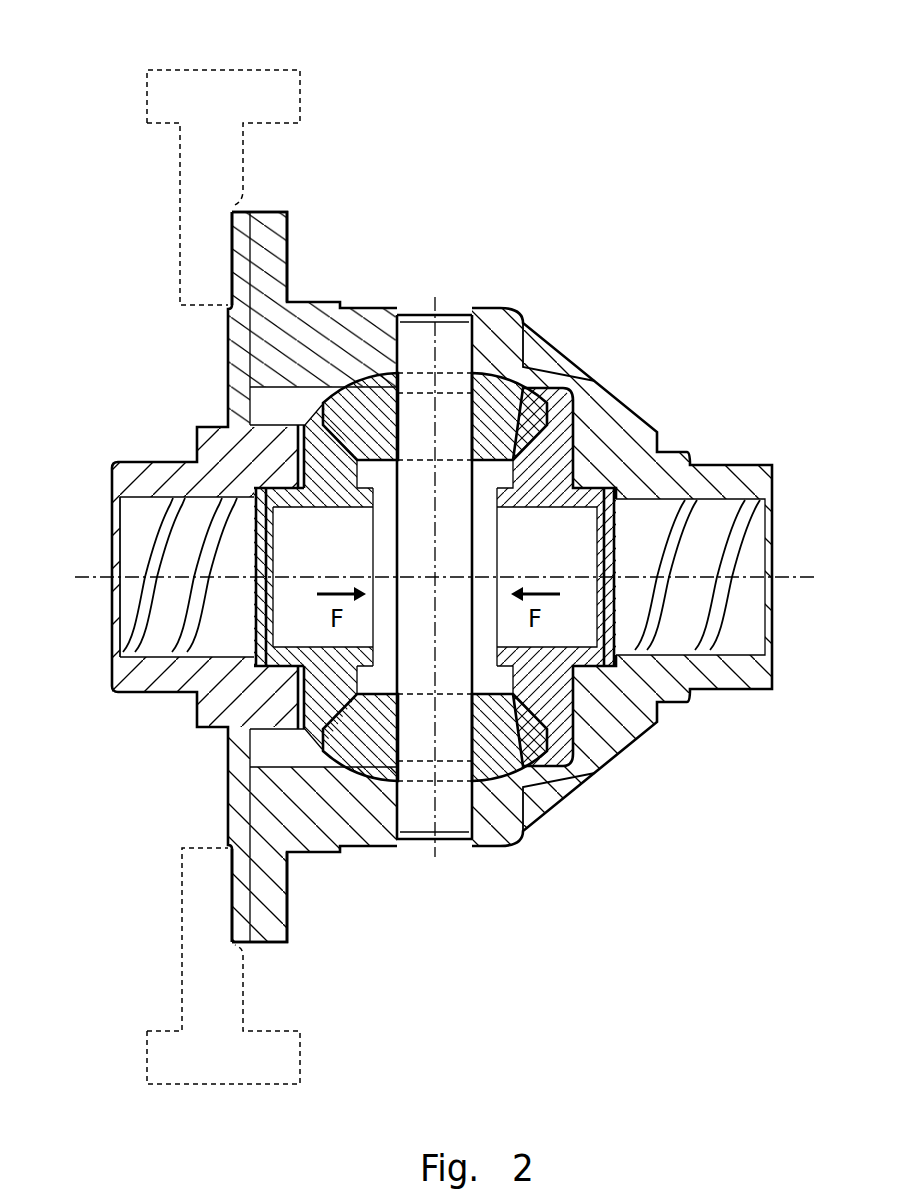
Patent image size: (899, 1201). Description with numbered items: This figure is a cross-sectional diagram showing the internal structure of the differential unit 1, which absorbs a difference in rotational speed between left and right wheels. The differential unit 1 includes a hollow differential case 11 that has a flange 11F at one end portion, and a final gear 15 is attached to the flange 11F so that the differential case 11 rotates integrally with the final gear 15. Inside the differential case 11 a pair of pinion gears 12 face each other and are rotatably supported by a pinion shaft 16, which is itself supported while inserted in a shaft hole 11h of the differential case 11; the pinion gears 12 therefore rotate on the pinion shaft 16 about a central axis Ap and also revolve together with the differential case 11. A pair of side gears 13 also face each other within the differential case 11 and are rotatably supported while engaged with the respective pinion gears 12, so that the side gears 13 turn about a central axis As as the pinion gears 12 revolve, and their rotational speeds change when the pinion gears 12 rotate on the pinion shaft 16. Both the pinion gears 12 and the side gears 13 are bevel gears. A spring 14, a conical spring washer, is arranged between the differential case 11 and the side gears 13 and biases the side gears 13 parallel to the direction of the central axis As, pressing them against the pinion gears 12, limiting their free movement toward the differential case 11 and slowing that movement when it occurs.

The differential unit 1 is at (733, 212).
The differential case 11 is at (634, 401).
The flange 11F is at (289, 913).
The shaft hole 11h is at (421, 312).
The pinion gears 12 is at (528, 370).
The side gears 13 is at (315, 395).
The spring 14 is at (270, 705).
The final gear 15 is at (205, 73).
The pinion shaft 16 is at (122, 546).
The central axis Ap is at (443, 306).
The central axis As is at (438, 610).